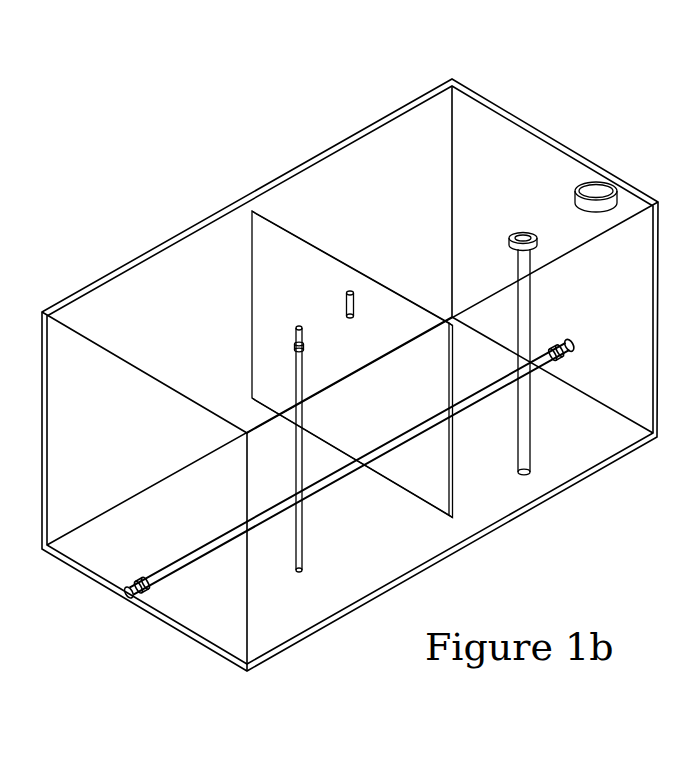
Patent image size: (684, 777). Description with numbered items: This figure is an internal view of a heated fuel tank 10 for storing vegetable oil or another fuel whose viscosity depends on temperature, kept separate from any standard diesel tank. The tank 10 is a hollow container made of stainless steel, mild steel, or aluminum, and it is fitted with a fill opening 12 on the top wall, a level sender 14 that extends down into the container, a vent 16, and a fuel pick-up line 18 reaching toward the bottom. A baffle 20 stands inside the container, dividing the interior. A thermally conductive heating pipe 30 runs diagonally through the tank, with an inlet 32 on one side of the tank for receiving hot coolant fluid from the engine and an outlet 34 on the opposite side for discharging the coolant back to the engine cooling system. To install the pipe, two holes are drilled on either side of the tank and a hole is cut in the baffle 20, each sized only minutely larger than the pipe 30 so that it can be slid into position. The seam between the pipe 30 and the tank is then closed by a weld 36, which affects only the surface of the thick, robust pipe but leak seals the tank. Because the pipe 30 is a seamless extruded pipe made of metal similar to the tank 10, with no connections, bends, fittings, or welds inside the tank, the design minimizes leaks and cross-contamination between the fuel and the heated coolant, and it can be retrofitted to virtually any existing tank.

The heated fuel tank 10 is at (273, 50).
The fill opening 12 is at (597, 188).
The level sender 14 is at (522, 230).
The vent 16 is at (355, 304).
The fuel pick-up line 18 is at (304, 519).
The baffle 20 is at (308, 276).
The heating pipe 30 is at (362, 483).
The inlet 32 is at (126, 603).
The outlet 34 is at (575, 338).
The weld 36 is at (160, 584).